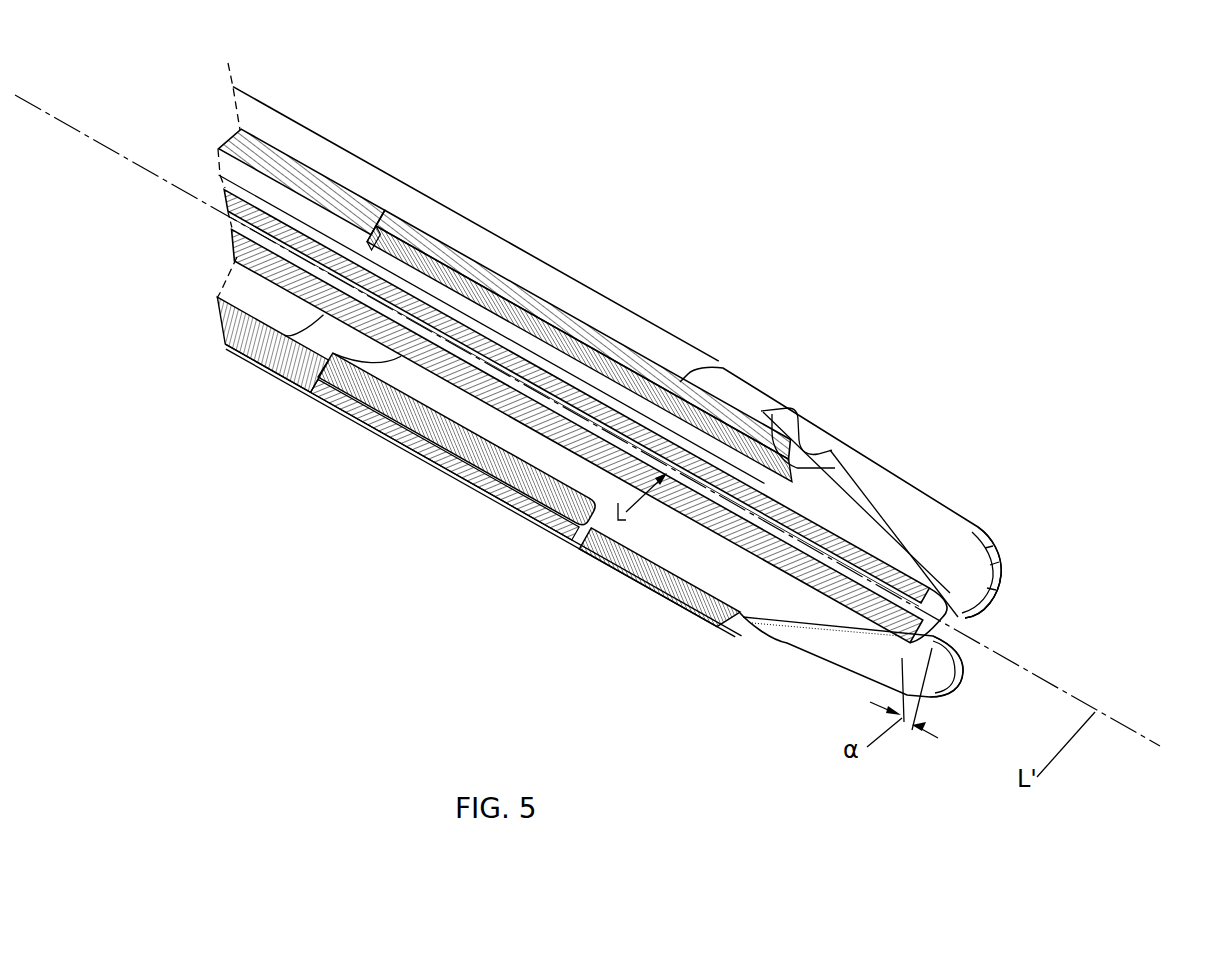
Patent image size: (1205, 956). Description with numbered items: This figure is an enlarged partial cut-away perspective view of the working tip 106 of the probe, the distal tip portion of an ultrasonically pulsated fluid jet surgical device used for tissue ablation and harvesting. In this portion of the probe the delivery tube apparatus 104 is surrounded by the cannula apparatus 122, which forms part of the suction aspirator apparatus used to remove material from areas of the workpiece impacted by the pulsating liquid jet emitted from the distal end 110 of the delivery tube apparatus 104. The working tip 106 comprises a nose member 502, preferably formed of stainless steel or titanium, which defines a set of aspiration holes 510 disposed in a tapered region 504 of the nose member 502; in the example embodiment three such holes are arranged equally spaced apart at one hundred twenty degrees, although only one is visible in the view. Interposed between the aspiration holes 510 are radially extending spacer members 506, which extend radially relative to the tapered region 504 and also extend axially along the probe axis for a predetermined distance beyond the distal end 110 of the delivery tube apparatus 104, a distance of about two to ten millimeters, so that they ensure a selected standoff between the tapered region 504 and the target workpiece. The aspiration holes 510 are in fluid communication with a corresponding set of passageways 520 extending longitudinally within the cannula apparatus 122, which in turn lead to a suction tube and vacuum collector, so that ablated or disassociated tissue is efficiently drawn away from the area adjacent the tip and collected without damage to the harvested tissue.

The cannula apparatus 122 is at (418, 178).
The working tip 106 is at (784, 259).
The nose member 502 is at (740, 412).
The tapered region 504 is at (827, 448).
The aspiration holes 510 is at (837, 505).
The spacer members 506 is at (947, 543).
The delivery tube apparatus 104 is at (999, 570).
The distal end 110 is at (1024, 596).
The passageways 520 is at (460, 478).